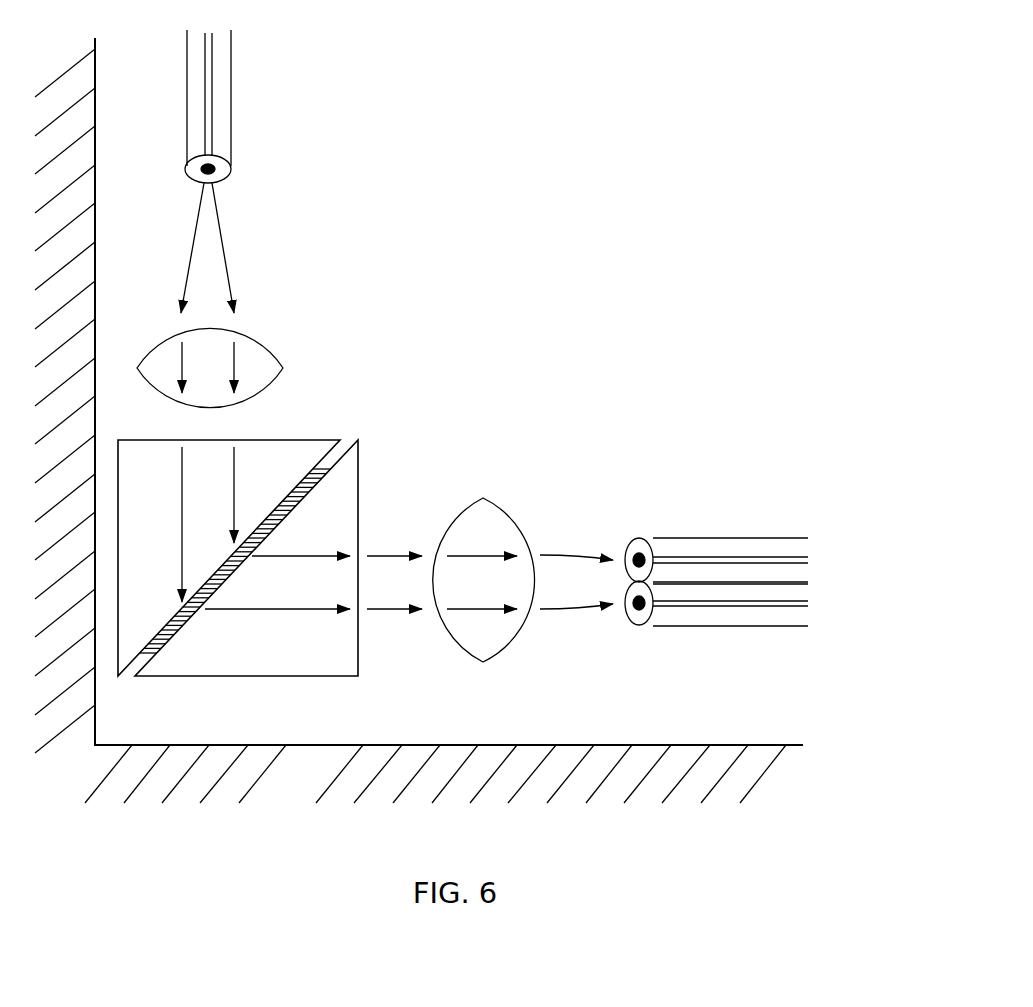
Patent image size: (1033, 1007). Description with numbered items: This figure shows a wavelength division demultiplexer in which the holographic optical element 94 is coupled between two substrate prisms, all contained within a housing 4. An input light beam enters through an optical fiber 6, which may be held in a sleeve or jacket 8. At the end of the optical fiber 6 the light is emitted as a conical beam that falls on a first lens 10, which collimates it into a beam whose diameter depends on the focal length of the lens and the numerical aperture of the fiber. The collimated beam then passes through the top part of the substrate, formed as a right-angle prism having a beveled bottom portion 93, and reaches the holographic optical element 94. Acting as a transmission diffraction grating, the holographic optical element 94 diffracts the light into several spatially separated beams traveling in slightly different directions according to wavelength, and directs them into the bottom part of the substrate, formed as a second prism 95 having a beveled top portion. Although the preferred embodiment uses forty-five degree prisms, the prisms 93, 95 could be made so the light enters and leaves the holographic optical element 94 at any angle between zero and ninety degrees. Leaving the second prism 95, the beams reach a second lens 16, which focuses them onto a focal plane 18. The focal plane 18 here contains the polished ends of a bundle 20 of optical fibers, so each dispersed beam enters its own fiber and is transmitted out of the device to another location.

The housing 4 is at (419, 420).
The optical fiber 6 is at (220, 63).
The sleeve or jacket 8 is at (186, 170).
The first lens 10 is at (250, 353).
The right-angle prism with beveled bottom portion 93 is at (310, 440).
The holographic optical element 94 is at (345, 440).
The second prism with beveled top portion 95 is at (360, 485).
The second lens 16 is at (485, 641).
The focal plane 18 is at (646, 540).
The bundle of optical fibers 20 is at (730, 548).